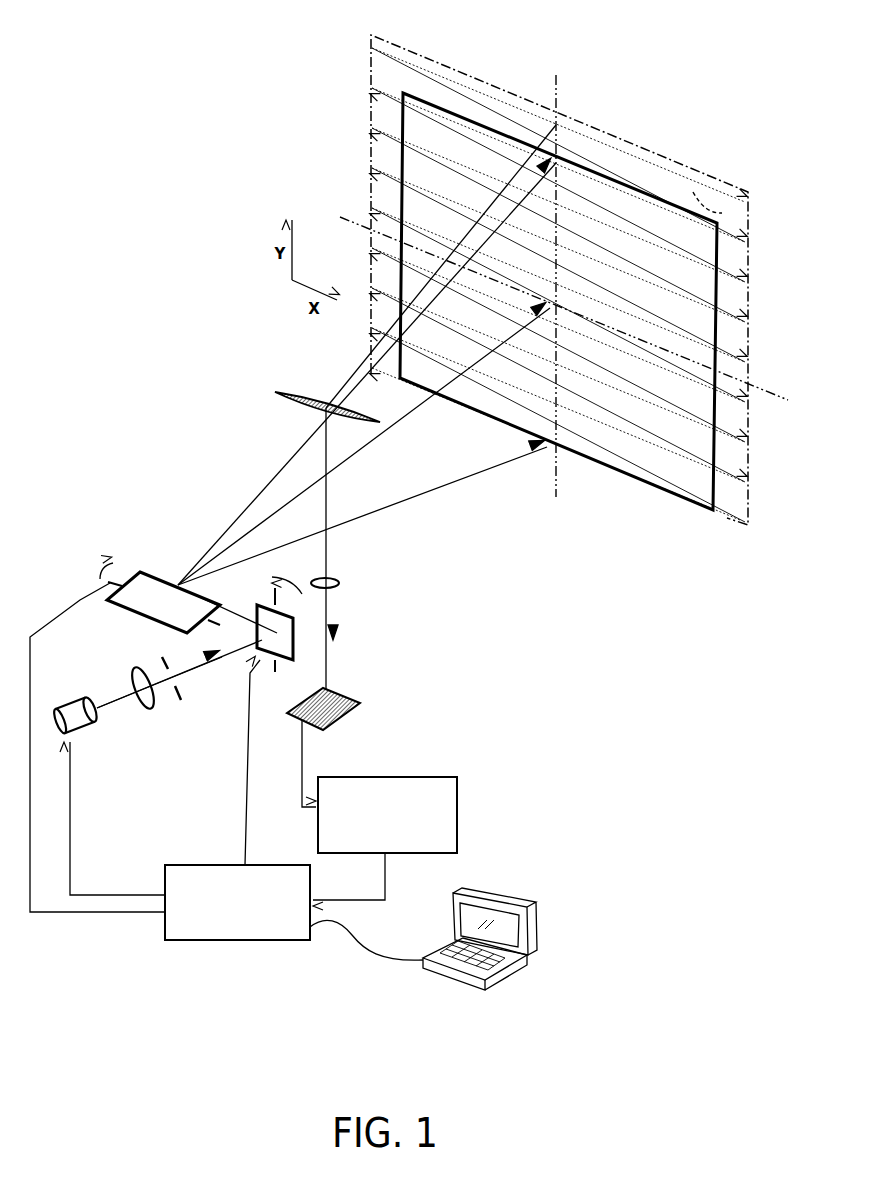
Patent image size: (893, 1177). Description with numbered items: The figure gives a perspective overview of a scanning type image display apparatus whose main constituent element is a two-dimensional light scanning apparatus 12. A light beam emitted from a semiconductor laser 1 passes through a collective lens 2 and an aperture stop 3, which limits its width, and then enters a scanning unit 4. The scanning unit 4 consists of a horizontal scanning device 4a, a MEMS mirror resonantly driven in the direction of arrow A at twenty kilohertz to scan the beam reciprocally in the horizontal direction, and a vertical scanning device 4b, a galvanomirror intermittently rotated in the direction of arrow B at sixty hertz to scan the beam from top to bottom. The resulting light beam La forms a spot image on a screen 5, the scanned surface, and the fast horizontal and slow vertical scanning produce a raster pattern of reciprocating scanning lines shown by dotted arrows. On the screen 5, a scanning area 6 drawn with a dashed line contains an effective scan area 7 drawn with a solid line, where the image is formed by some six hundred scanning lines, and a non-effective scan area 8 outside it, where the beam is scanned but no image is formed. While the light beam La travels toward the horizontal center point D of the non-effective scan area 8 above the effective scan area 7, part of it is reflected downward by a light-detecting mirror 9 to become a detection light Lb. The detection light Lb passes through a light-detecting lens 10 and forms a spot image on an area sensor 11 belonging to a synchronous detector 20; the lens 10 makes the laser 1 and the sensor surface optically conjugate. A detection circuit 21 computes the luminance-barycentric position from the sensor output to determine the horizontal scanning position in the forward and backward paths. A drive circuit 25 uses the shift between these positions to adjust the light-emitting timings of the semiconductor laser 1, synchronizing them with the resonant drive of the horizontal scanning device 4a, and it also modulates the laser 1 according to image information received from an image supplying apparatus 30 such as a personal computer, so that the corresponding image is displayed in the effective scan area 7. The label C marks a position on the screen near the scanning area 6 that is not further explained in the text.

The semiconductor laser 1 is at (86, 748).
The collective lens 2 is at (159, 723).
The aperture stop 3 is at (188, 711).
The scanning unit 4 is at (171, 468).
The horizontal scanning device 4a is at (252, 592).
The vertical scanning device 4b is at (145, 560).
The screen 5 is at (497, 58).
The scanning area 6 is at (728, 180).
The effective scan area 7 is at (700, 250).
The non-effective scan area 8 is at (432, 86).
The light-detecting mirror 9 is at (286, 384).
The light-detecting lens 10 is at (349, 588).
The area sensor 11 is at (344, 723).
The two-dimensional light scanning apparatus 12 is at (394, 655).
The synchronous detector 20 is at (503, 757).
The detection circuit 21 is at (457, 808).
The drive circuit 25 is at (260, 943).
The image supplying apparatus 30 is at (530, 912).
The light beam La is at (268, 508).
The detection light Lb is at (334, 515).
The pointer position C is at (718, 210).
The center point D is at (563, 116).